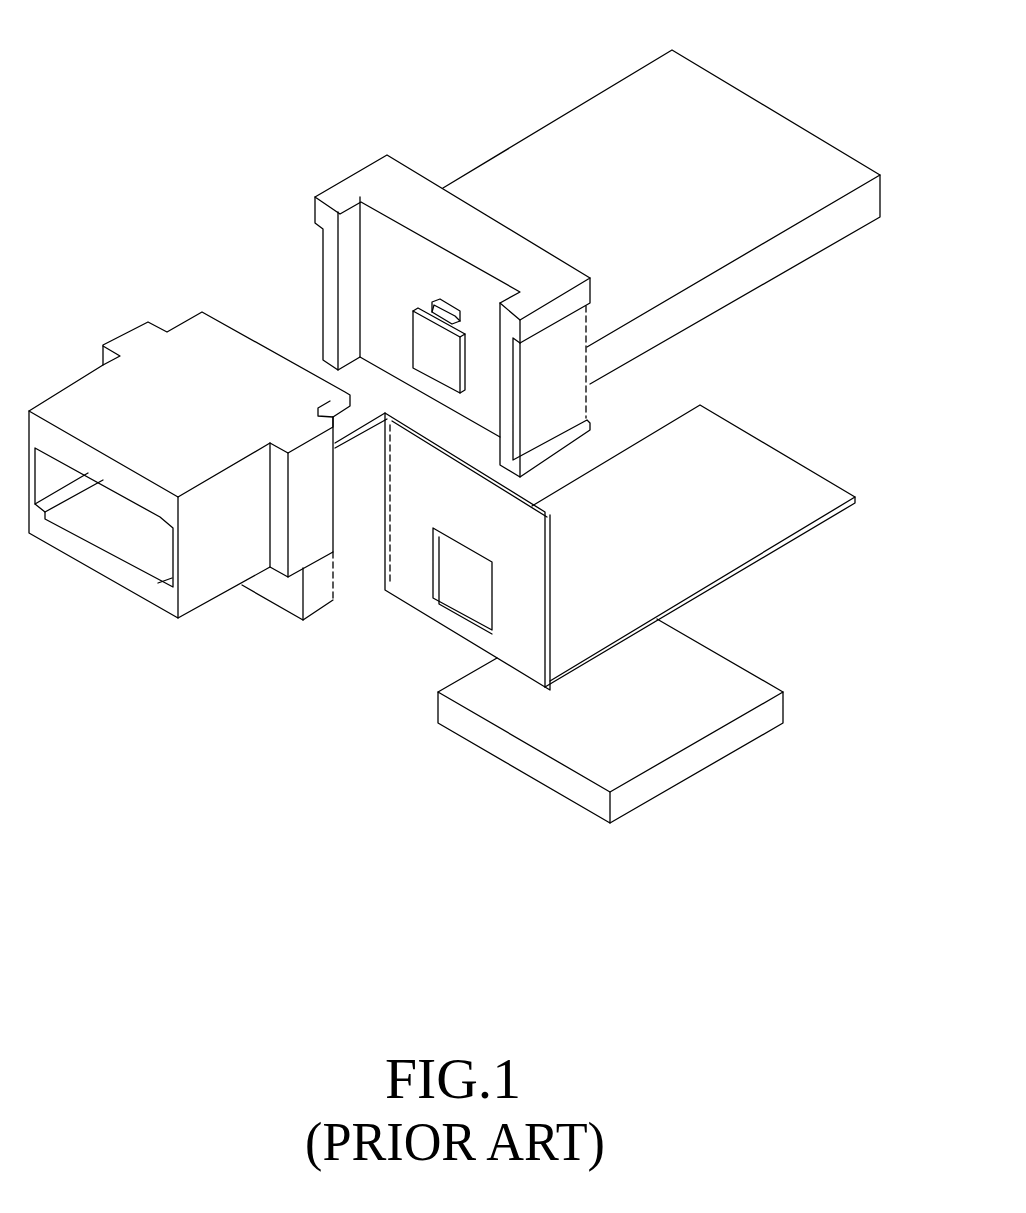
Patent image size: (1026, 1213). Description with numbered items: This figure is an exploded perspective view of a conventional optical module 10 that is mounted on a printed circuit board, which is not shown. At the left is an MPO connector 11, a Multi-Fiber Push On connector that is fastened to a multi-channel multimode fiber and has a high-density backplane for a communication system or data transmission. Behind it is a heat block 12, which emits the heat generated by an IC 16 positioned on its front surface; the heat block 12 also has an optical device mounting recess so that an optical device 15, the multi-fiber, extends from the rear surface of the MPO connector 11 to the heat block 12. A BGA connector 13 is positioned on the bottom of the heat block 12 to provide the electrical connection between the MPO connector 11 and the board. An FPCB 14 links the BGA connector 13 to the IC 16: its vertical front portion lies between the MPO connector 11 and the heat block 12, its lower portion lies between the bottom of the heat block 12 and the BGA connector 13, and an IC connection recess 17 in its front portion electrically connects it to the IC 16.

The optical module 10 is at (264, 168).
The MPO connector 11 is at (103, 388).
The heat block 12 is at (740, 108).
The BGA connector 13 is at (657, 730).
The FPCB 14 is at (703, 567).
The optical device 15 is at (442, 305).
The IC 16 is at (425, 345).
The IC connection recess 17 is at (473, 585).